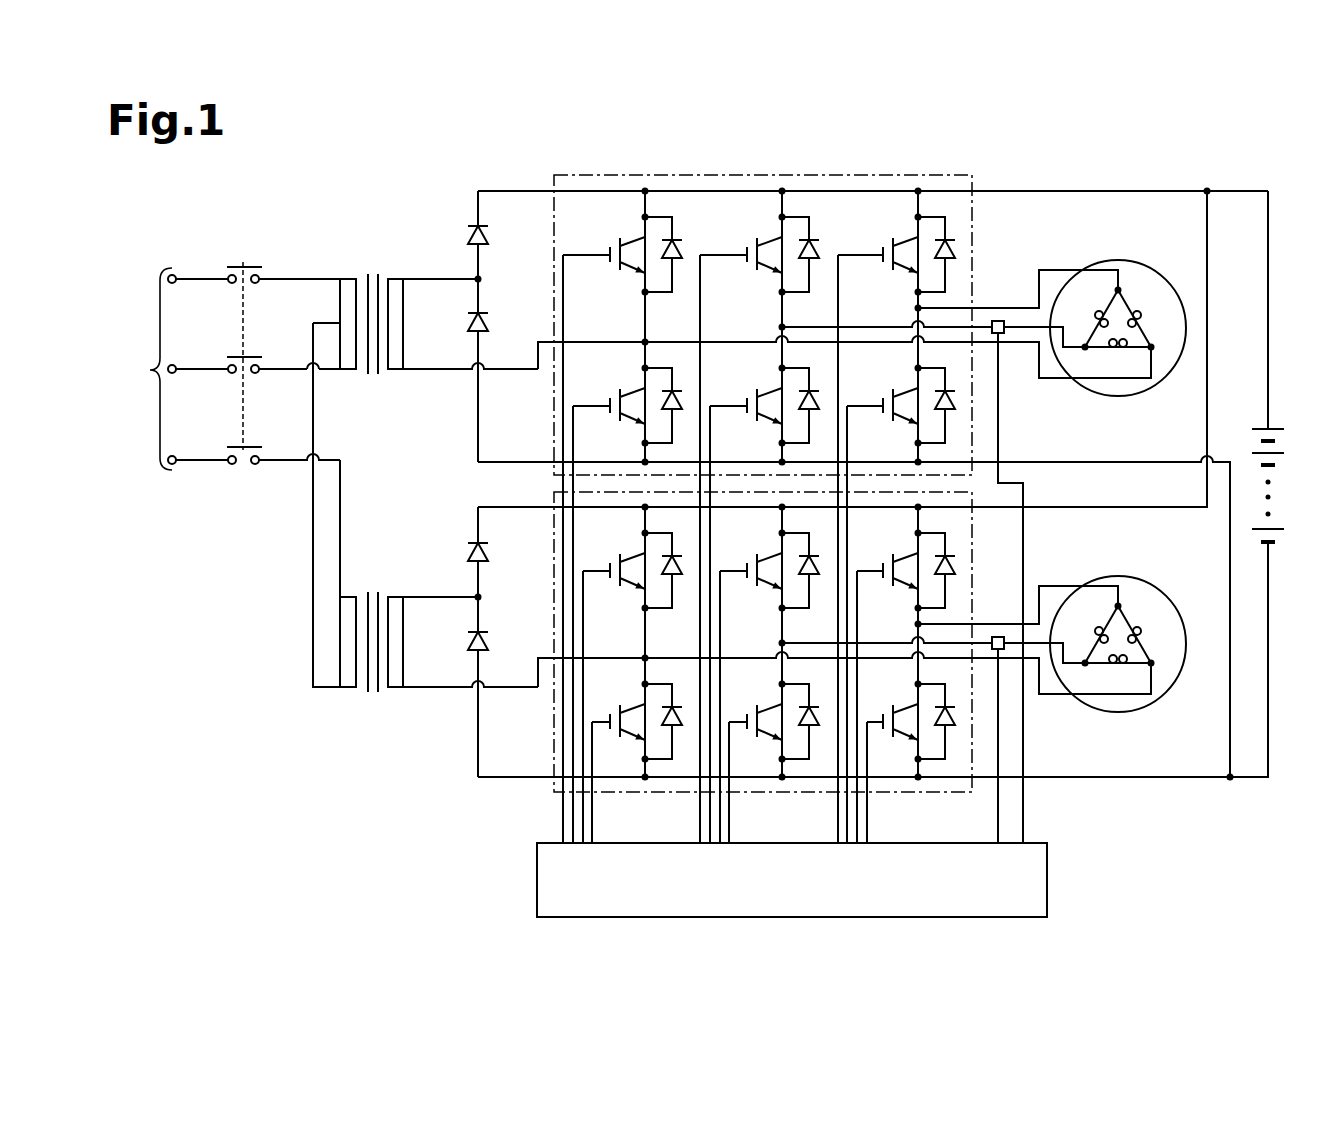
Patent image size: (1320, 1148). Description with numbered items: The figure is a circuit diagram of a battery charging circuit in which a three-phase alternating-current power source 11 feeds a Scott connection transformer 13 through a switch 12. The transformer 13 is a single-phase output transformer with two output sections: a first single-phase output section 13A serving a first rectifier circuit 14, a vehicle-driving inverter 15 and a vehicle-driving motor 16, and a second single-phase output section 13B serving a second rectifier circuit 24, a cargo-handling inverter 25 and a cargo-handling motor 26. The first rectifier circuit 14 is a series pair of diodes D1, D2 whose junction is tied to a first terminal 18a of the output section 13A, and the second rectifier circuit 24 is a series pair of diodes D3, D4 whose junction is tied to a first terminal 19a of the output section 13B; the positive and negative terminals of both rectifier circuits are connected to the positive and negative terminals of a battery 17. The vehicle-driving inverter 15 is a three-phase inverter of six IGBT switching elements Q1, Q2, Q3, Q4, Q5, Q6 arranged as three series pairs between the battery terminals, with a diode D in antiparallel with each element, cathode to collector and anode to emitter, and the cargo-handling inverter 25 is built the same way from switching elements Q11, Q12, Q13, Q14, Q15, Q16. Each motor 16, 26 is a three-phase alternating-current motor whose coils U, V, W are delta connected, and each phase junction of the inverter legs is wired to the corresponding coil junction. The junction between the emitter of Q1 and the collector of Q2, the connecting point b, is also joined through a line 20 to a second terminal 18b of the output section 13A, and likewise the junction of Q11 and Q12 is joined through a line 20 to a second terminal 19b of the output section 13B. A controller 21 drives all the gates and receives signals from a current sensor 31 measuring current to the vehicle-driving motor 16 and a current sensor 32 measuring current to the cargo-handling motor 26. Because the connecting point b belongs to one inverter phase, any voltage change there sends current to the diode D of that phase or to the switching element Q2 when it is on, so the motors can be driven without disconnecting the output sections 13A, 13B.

The three-phase alternating-current power source 11 is at (158, 370).
The switch 12 is at (247, 264).
The Scott connection transformer 13 is at (349, 261).
The first single-phase output section 13A is at (393, 279).
The second single-phase output section 13B is at (394, 597).
The first rectifier circuit 14 is at (480, 321).
The second rectifier circuit 24 is at (481, 638).
The vehicle-driving inverter 15 is at (763, 495).
The cargo-handling inverter 25 is at (763, 667).
The vehicle-driving motor 16 is at (1165, 277).
The cargo-handling motor 26 is at (1165, 592).
The battery 17 is at (1272, 427).
The first terminal of the first single-phase output section 18a is at (431, 279).
The second terminal of the first single-phase output section 18b is at (428, 372).
The first terminal of the second single-phase output section 19a is at (431, 597).
The second terminal of the second single-phase output section 19b is at (428, 690).
The line 20 is at (515, 375).
The controller 21 is at (1048, 882).
The current sensor 31 is at (998, 321).
The current sensor 32 is at (998, 637).
The connecting point b is at (643, 338).
The diode D1 is at (490, 235).
The diode D2 is at (490, 323).
The diode D3 is at (490, 553).
The diode D4 is at (490, 642).
The diode D is at (677, 262).
The first switching element Q1 is at (630, 238).
The second switching element Q2 is at (630, 389).
The third switching element Q3 is at (767, 238).
The fourth switching element Q4 is at (767, 389).
The fifth switching element Q5 is at (903, 238).
The sixth switching element Q6 is at (903, 389).
The first switching element Q11 is at (630, 554).
The second switching element Q12 is at (630, 705).
The third switching element Q13 is at (767, 554).
The fourth switching element Q14 is at (767, 705).
The fifth switching element Q15 is at (903, 554).
The sixth switching element Q16 is at (903, 705).
The coil U is at (1143, 319).
The coil V is at (1114, 357).
The coil W is at (1092, 319).